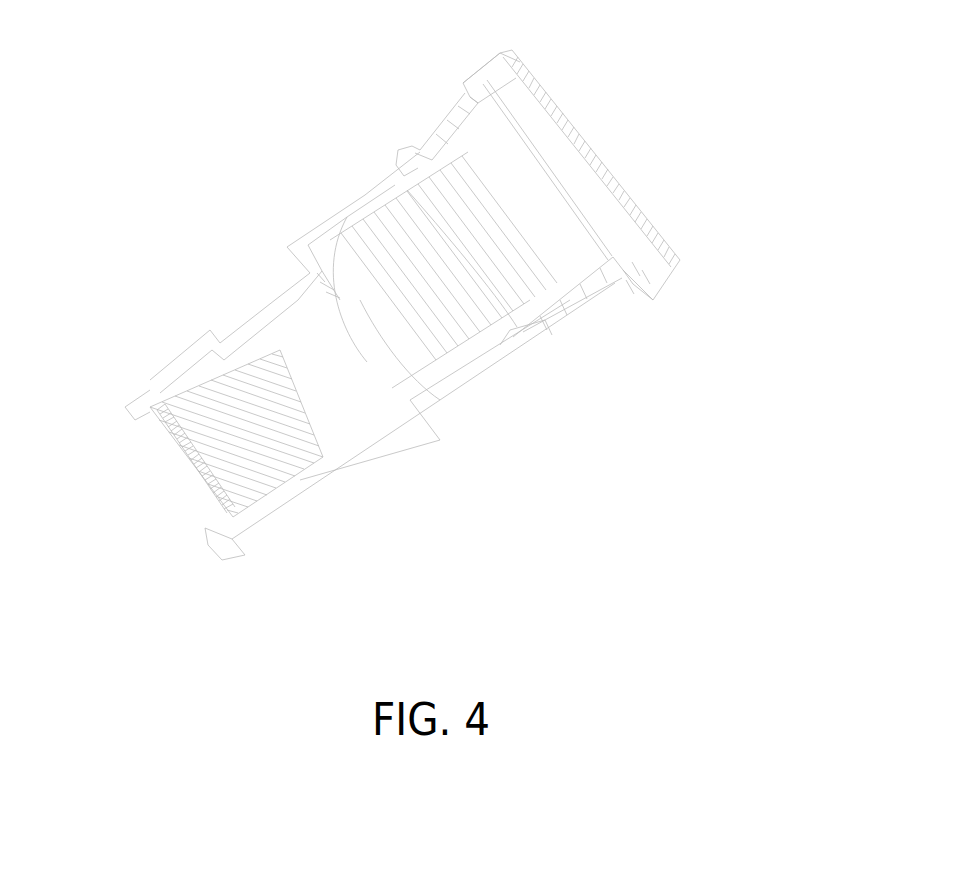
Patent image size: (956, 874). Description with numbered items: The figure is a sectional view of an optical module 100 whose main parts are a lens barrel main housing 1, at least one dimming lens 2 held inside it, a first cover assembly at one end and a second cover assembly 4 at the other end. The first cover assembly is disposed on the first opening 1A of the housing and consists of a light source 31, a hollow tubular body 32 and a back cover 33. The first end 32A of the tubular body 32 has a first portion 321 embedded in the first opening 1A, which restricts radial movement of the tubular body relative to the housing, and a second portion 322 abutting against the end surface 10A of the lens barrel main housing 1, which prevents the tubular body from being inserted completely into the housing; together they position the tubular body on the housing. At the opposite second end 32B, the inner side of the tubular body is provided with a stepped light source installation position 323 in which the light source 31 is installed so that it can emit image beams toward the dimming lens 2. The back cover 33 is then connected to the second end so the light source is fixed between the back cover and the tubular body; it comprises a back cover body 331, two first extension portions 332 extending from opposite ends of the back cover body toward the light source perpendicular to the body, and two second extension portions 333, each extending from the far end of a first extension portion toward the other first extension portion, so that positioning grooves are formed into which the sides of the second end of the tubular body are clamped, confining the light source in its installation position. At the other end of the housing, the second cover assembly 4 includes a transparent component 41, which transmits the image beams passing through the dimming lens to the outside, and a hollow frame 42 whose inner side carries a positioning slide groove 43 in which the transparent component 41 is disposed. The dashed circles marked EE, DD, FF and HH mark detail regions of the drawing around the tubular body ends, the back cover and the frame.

The optical module 100 is at (122, 51).
The lens barrel main housing 1 is at (227, 337).
The first opening 1A is at (420, 187).
The end surface 10A is at (403, 155).
The dimming lens 2 is at (287, 452).
The light source 31 is at (540, 133).
The tubular body 32 is at (467, 133).
The first end 32A is at (216, 93).
The second end 32B is at (590, 48).
The first portion 321 is at (397, 179).
The second portion 322 is at (392, 152).
The light source installation position 323 is at (498, 78).
The back cover 33 is at (757, 200).
The back cover body 331 is at (637, 218).
The first extension portion 332 is at (660, 274).
The second extension portion 333 is at (623, 283).
The second cover assembly 4 is at (97, 403).
The transparent component 41 is at (190, 482).
The frame 42 is at (133, 415).
The positioning slide groove 43 is at (218, 527).
The detail region EE is at (505, 52).
The detail region DD is at (400, 146).
The detail region FF is at (613, 263).
The detail region HH is at (140, 415).